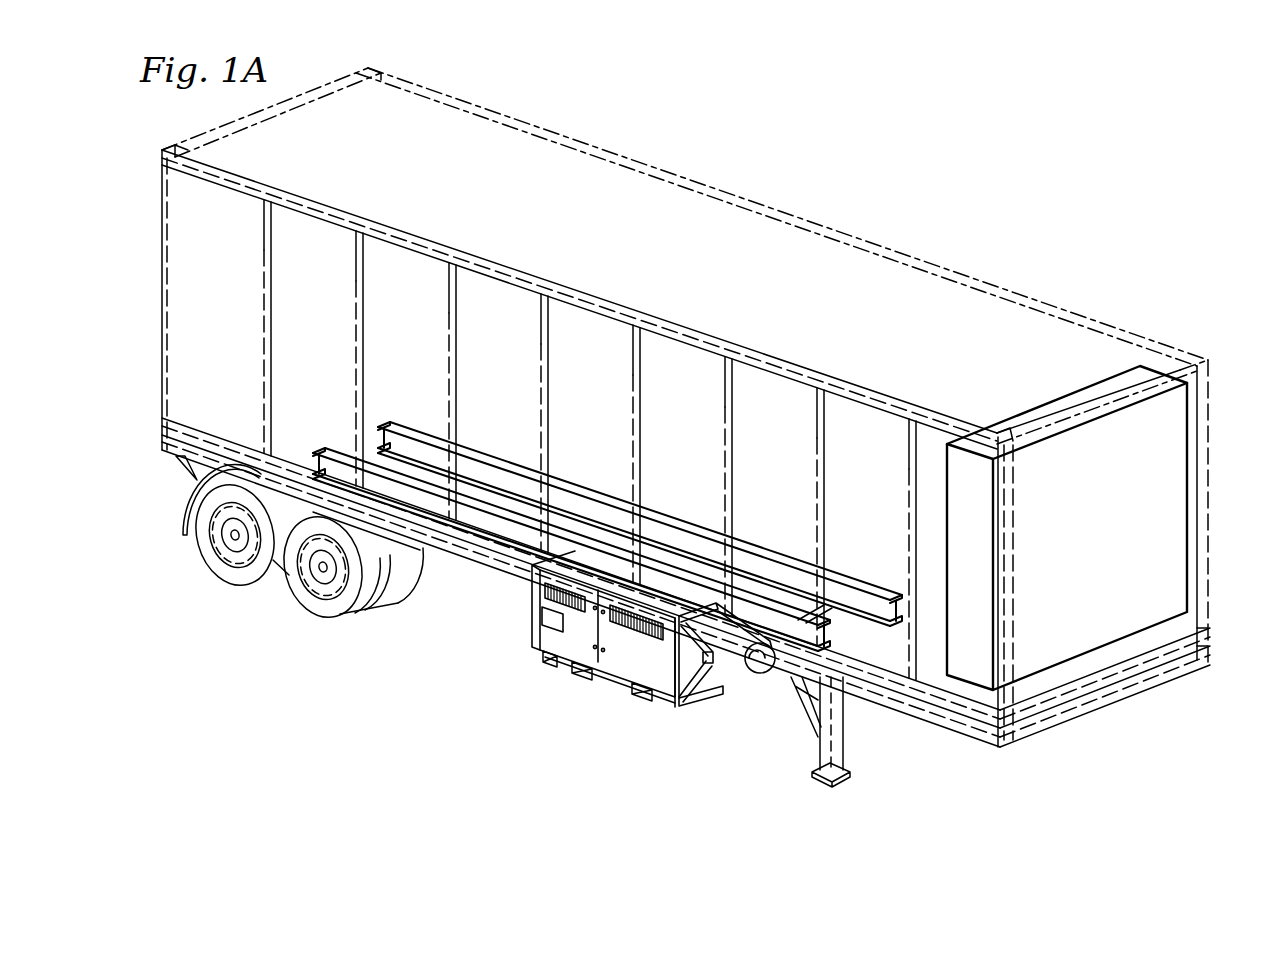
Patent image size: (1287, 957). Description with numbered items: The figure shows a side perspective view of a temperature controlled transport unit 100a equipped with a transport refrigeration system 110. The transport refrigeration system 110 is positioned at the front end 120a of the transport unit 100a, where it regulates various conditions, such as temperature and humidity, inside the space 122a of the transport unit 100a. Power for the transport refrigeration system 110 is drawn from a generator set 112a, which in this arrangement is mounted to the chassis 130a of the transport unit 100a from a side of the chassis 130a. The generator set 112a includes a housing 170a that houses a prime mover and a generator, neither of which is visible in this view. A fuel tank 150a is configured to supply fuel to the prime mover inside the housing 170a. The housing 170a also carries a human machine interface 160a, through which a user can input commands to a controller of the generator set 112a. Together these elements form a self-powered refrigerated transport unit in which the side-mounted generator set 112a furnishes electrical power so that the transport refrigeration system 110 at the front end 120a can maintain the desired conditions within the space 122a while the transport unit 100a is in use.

The temperature controlled transport unit 100a is at (1022, 146).
The transport refrigeration system 110 is at (1188, 526).
The generator set 112a is at (623, 657).
The front end 120a is at (1222, 368).
The space 122a is at (884, 333).
The chassis 130a is at (867, 607).
The fuel tank 150a is at (753, 673).
The human machine interface (HMI) 160a is at (553, 620).
The housing 170a is at (665, 673).